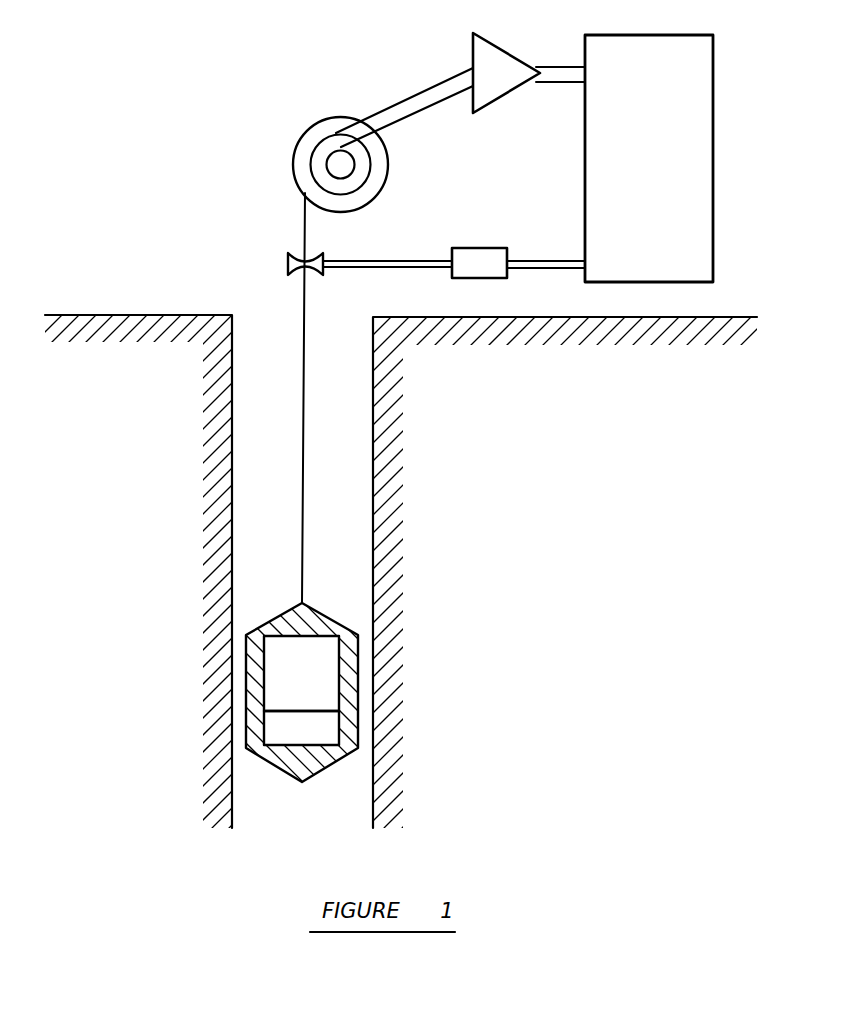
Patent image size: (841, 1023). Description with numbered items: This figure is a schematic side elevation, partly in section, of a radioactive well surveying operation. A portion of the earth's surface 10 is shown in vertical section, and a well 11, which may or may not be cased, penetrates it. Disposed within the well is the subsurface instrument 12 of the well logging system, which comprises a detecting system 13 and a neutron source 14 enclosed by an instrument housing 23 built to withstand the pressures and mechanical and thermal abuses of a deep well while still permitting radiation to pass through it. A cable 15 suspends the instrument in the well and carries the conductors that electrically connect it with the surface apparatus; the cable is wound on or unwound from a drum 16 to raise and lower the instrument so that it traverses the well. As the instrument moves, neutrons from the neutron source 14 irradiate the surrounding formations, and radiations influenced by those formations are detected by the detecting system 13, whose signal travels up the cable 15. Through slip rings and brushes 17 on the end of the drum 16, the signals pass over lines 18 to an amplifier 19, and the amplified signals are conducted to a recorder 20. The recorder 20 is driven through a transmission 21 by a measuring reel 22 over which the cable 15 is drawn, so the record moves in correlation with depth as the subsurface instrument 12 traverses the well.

The earth's surface 10 is at (73, 355).
The well 11 is at (352, 330).
The subsurface instrument 12 is at (353, 680).
The detecting system 13 is at (327, 673).
The neutron source 14 is at (330, 723).
The cable 15 is at (303, 389).
The drum 16 is at (388, 170).
The slip rings and brushes 17 is at (340, 178).
The lines 18 is at (423, 103).
The amplifier 19 is at (493, 52).
The recorder 20 is at (698, 88).
The transmission 21 is at (467, 255).
The measuring reel 22 is at (302, 260).
The instrument housing 23 is at (330, 765).